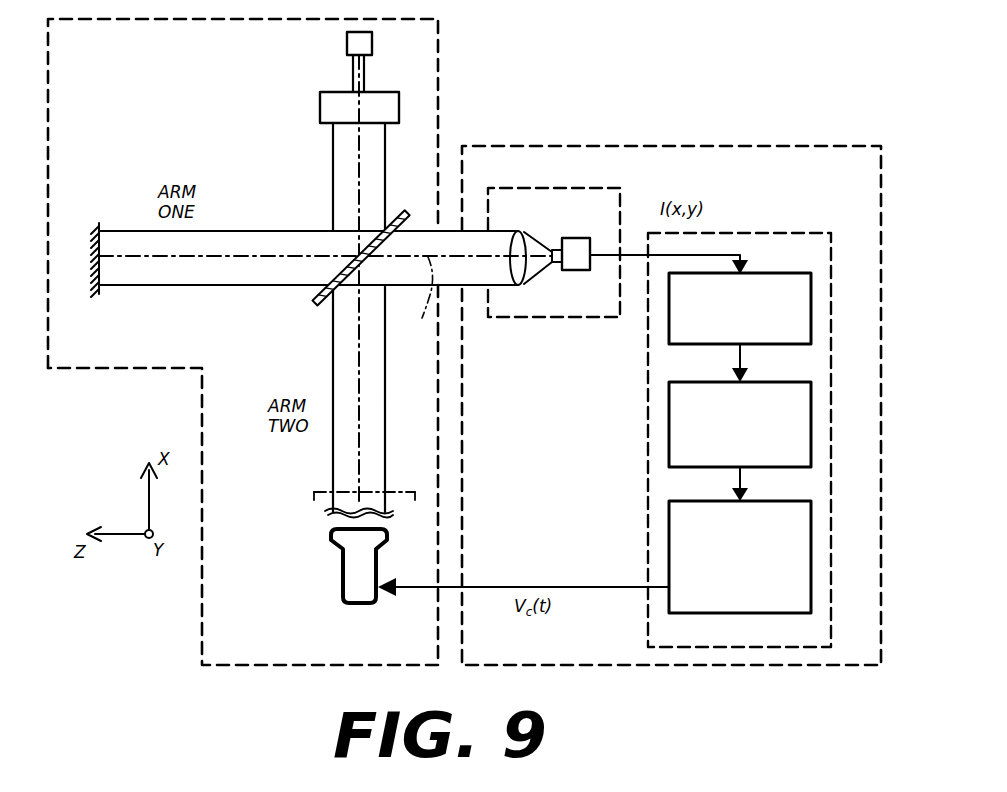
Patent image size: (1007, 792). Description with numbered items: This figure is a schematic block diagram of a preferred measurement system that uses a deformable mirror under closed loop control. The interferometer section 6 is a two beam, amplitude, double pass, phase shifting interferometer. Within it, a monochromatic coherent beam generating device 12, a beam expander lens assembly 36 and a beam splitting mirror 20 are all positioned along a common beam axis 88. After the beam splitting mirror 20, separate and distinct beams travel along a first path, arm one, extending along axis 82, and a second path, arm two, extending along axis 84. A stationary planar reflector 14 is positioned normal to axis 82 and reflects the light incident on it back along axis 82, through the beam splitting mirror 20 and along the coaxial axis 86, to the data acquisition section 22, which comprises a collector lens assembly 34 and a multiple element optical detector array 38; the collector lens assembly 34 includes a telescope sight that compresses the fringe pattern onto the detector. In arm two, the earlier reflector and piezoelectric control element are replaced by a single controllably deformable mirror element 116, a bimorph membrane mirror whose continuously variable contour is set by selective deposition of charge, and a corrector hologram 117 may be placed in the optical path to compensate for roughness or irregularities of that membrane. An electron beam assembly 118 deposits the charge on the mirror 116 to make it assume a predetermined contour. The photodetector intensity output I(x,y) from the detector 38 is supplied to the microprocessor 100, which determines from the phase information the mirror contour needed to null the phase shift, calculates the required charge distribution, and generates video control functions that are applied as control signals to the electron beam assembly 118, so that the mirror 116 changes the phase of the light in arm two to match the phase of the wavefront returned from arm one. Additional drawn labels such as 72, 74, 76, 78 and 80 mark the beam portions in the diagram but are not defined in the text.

The interferometer section 6 is at (100, 372).
The monochromatic coherent beam generating device 12 is at (372, 44).
The stationary planar reflector 14 is at (100, 226).
The beam splitting mirror 20 is at (406, 212).
The data acquisition section 22 is at (620, 190).
The collector lens assembly 34 is at (522, 285).
The beam expander lens assembly 36 is at (320, 108).
The multiple element optical detector array 38 is at (574, 238).
The light beam 72 is at (366, 72).
The arm one beam 74 is at (268, 231).
The arm two beam 76 is at (333, 342).
The output beam 78 is at (406, 285).
The focused beam 80 is at (538, 272).
The arm one axis 82 is at (173, 258).
The arm two axis 84 is at (336, 446).
The coaxial axis 86 is at (423, 320).
The beam axis 88 is at (357, 155).
The microprocessor 100 is at (604, 440).
The controllably deformable mirror element 116 is at (325, 513).
The corrector hologram 117 is at (396, 490).
The electron beam assembly 118 is at (343, 577).